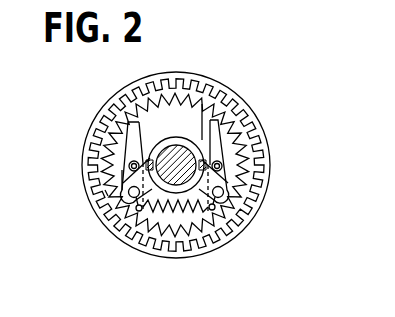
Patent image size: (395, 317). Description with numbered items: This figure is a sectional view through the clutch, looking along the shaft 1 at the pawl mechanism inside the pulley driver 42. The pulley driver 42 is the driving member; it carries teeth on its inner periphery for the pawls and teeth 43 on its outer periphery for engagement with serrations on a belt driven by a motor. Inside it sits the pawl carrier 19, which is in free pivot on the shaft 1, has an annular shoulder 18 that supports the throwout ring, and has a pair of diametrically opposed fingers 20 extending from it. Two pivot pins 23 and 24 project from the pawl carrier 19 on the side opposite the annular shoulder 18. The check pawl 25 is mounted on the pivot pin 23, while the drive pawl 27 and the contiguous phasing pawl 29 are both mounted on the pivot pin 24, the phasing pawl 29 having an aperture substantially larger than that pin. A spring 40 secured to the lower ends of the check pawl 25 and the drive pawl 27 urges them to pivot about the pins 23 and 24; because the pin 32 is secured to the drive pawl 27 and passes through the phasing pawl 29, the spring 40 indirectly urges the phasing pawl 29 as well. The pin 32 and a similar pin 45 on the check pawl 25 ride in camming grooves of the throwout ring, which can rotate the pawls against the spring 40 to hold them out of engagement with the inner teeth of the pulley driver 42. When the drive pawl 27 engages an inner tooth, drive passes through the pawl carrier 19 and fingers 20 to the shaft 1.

The shaft 1 is at (168, 155).
The annular shoulder 18 is at (175, 143).
The pawl carrier 19 is at (151, 186).
The fingers 20 is at (203, 104).
The pivot pin 23 is at (129, 197).
The pivot pin 24 is at (224, 192).
The check pawl 25 is at (137, 124).
The drive pawl 27 is at (217, 145).
The phasing pawl 29 is at (219, 118).
The pin 32 is at (222, 166).
The spring 40 is at (196, 198).
The pulley driver 42 is at (103, 193).
The teeth 43 is at (121, 185).
The pin 45 is at (129, 165).